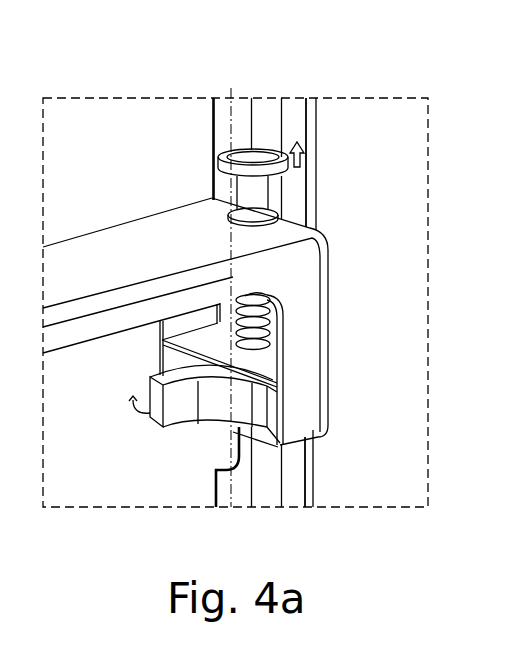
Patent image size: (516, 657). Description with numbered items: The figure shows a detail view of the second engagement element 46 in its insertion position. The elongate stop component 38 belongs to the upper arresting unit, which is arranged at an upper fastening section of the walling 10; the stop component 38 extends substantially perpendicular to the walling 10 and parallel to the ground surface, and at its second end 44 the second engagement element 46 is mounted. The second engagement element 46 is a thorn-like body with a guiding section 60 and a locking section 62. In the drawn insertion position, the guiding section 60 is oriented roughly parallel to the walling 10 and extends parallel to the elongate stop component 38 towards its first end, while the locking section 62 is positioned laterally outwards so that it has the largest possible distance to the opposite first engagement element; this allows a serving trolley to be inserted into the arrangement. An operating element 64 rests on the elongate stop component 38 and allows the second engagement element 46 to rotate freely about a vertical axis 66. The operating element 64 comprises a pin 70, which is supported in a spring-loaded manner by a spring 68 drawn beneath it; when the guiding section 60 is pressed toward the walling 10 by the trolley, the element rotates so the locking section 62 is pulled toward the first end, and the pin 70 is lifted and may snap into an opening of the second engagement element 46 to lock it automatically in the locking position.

The walling 10 is at (82, 177).
The elongate stop component 38 is at (125, 259).
The second end 44 is at (203, 183).
The second engagement element 46 is at (336, 232).
The guiding section 60 is at (188, 398).
The locking section 62 is at (257, 413).
The operating element 64 is at (258, 163).
The vertical axis 66 is at (231, 91).
The spring 68 is at (272, 323).
The pin 70 is at (272, 308).